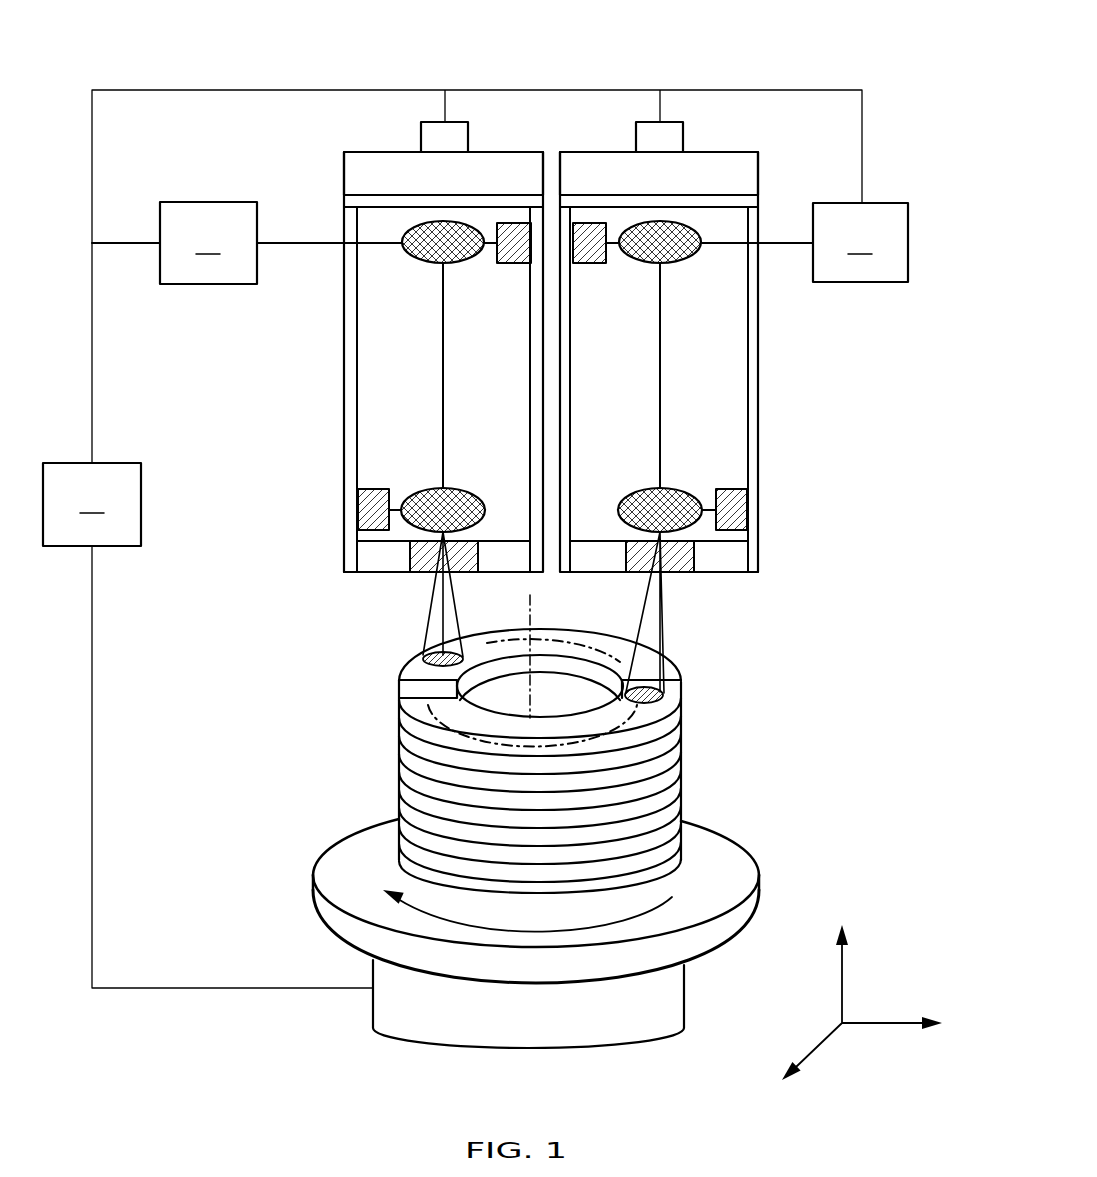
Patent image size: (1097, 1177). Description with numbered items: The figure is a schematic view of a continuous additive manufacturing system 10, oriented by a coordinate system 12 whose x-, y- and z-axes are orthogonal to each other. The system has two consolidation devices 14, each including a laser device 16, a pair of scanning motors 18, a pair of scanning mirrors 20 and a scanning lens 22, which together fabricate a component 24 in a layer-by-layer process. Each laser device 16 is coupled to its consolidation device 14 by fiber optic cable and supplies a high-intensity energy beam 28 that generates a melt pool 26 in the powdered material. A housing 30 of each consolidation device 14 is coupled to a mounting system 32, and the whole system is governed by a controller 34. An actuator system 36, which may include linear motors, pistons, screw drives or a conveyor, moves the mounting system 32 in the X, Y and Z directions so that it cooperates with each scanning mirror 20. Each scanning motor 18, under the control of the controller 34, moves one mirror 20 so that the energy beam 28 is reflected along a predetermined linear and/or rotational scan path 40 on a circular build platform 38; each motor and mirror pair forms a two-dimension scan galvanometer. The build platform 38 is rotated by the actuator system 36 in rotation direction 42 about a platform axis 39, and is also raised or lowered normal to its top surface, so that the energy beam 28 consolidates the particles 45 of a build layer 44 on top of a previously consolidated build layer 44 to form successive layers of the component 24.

The continuous additive manufacturing system 10 is at (785, 48).
The coordinate system 12 is at (806, 944).
The consolidation device 14 is at (256, 421).
The laser device 16 is at (294, 243).
The scanning motor 18 is at (512, 225).
The scanning mirror 20 is at (440, 235).
The scanning lens 22 is at (425, 570).
The component 24 is at (505, 652).
The melt pool 26 is at (452, 660).
The energy beam 28 is at (440, 392).
The housing 30 is at (344, 362).
The mounting system 32 is at (353, 175).
The controller 34 is at (92, 504).
The actuator system 36 is at (455, 135).
The build platform 38 is at (713, 835).
The platform axis 39 is at (538, 600).
The scan path 40 is at (410, 676).
The rotation direction 42 is at (433, 913).
The build layer 44 is at (400, 694).
The particles 45 is at (422, 660).